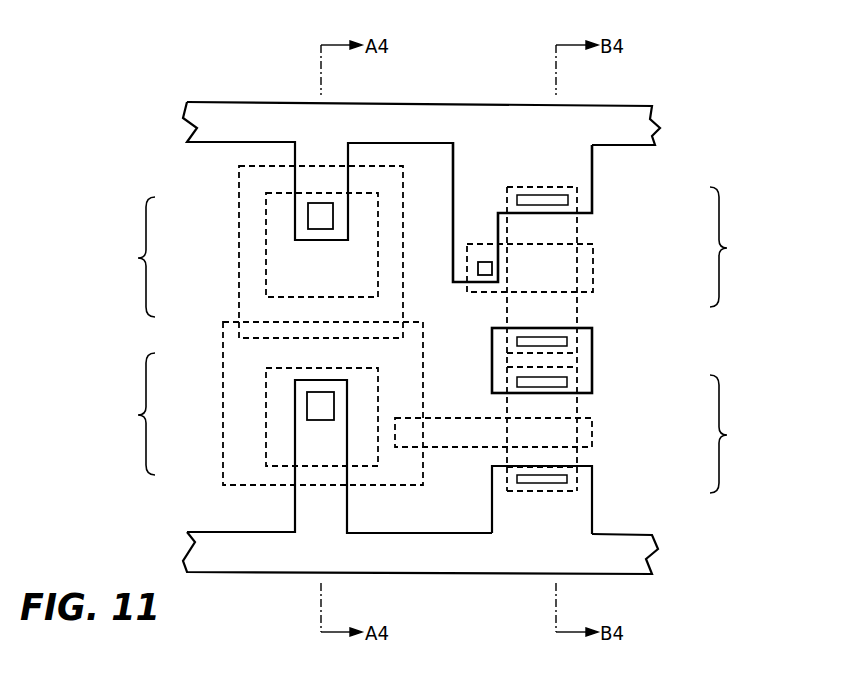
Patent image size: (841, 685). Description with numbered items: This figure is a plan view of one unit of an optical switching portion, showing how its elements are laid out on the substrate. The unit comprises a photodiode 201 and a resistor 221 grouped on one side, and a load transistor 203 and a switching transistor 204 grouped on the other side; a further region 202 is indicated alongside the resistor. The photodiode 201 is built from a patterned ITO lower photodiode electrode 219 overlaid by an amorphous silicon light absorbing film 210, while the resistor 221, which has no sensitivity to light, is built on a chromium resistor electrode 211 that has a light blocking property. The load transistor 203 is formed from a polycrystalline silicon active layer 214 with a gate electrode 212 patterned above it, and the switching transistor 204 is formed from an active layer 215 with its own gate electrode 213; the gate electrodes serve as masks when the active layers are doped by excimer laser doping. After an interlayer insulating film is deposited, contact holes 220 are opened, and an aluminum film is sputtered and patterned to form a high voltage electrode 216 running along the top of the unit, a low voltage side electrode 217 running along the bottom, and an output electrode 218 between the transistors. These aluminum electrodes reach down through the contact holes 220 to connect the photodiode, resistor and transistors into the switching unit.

The photodiode 201 is at (129, 257).
The second transistor cell region 202 is at (129, 414).
The load transistor 203 is at (737, 247).
The switching transistor 204 is at (737, 434).
The light absorbing film 210 is at (278, 199).
The resistor electrode 211 is at (238, 460).
The gate electrode 212 is at (587, 270).
The gate electrode 213 is at (585, 437).
The active layer 214 is at (553, 228).
The active layer 215 is at (563, 408).
The high voltage electrode 216 is at (625, 127).
The low voltage side electrode 217 is at (620, 575).
The output electrode 218 is at (585, 360).
The photodiode electrode 219 is at (260, 305).
The contact holes 220 is at (322, 215).
The resistor 221 is at (278, 403).